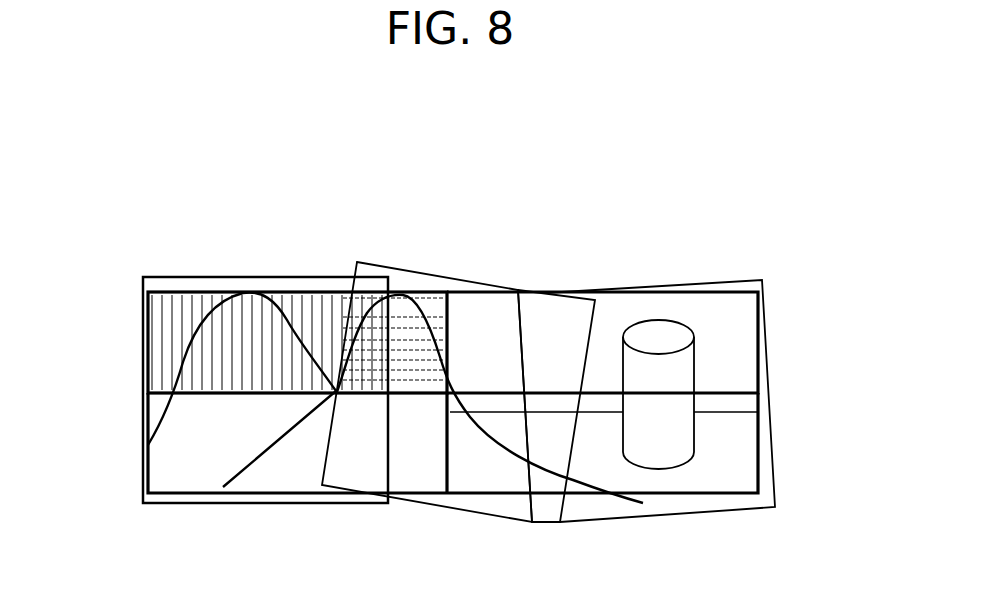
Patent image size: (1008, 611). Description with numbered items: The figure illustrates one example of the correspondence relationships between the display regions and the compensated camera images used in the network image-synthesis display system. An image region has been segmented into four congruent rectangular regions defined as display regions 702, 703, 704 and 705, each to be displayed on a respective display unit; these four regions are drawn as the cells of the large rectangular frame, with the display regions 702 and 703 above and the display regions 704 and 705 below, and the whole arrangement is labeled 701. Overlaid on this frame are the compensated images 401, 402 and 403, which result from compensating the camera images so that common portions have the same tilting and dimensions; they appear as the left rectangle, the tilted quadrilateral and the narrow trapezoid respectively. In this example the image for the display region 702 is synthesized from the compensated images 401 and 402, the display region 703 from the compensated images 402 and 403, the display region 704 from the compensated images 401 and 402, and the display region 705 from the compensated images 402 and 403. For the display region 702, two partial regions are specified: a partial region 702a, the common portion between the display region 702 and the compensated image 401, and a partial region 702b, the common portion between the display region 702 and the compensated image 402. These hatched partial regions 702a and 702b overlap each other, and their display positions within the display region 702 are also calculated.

The compensated image 401 is at (223, 507).
The compensated image 402 is at (442, 510).
The compensated image 403 is at (660, 514).
The backlight unit 701 is at (712, 291).
The display region 702 is at (142, 345).
The partial region 702a is at (243, 320).
The partial region 702b is at (415, 320).
The display region 703 is at (763, 333).
The display region 704 is at (142, 455).
The display region 705 is at (758, 468).